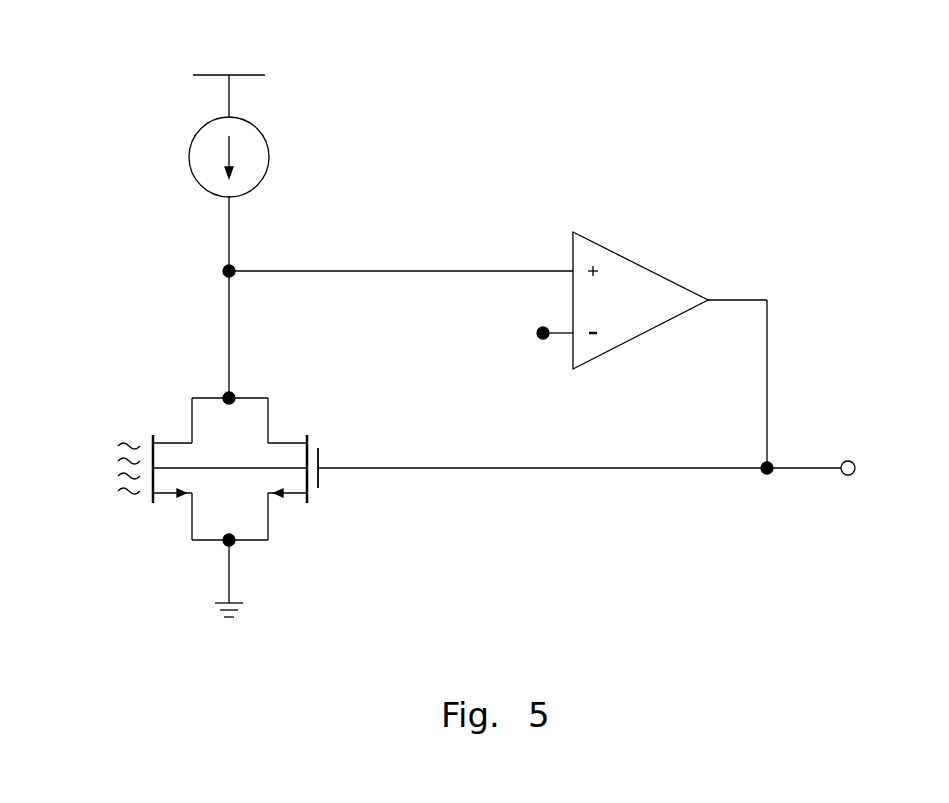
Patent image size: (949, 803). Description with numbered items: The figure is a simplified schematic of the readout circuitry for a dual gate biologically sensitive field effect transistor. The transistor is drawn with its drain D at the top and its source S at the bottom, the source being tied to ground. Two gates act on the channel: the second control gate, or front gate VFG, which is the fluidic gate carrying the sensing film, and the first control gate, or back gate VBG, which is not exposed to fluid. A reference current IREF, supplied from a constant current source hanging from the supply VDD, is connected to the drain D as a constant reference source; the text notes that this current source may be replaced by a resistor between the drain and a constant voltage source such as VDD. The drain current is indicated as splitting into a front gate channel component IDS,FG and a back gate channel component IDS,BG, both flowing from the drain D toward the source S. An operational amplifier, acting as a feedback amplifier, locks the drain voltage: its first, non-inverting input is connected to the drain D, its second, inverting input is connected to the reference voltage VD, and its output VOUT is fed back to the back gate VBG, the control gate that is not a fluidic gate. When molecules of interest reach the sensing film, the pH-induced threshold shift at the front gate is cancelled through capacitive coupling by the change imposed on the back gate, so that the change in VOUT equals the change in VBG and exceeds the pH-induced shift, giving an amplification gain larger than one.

The constant voltage source VDD is at (229, 72).
The reference current IREF is at (292, 117).
The reference voltage VD is at (531, 329).
The output voltage VOUT is at (621, 475).
The drain D is at (230, 401).
The source S is at (230, 555).
The front-gate channel drain-source current IDS,FG is at (177, 420).
The back-gate channel drain-source current IDS,BG is at (281, 420).
The second control gate VFG is at (105, 464).
The first control gate VBG is at (348, 481).